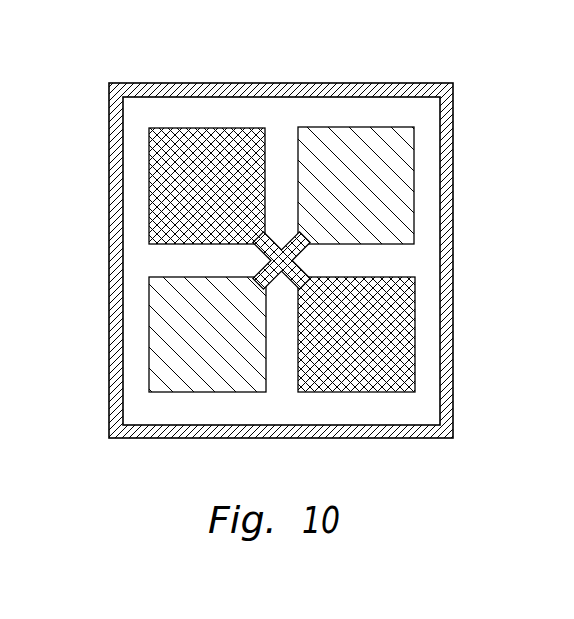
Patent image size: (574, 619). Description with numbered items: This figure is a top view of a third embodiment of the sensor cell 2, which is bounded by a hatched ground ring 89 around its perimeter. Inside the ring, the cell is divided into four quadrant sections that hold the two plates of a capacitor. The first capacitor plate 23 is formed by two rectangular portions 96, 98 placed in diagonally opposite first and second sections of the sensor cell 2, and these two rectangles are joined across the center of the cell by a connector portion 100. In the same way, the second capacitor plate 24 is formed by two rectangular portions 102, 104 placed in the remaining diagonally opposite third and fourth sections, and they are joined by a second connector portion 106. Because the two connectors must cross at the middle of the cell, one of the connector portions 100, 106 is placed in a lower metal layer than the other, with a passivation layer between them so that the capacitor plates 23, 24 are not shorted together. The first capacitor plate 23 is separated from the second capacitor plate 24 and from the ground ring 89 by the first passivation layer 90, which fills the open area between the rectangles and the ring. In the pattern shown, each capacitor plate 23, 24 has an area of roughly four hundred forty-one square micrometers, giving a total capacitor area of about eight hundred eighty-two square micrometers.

The sensor cell 2 is at (278, 241).
The first capacitor plate 23 is at (171, 393).
The second capacitor plate 24 is at (361, 393).
The ground ring 89 is at (183, 83).
The first passivation layer 90 is at (283, 125).
The rectangular portion 96 is at (167, 379).
The rectangular portion 98 is at (413, 147).
The connector portion 100 is at (322, 326).
The rectangular portion 102 is at (148, 135).
The rectangular portion 104 is at (398, 377).
The second connector portion 106 is at (300, 266).